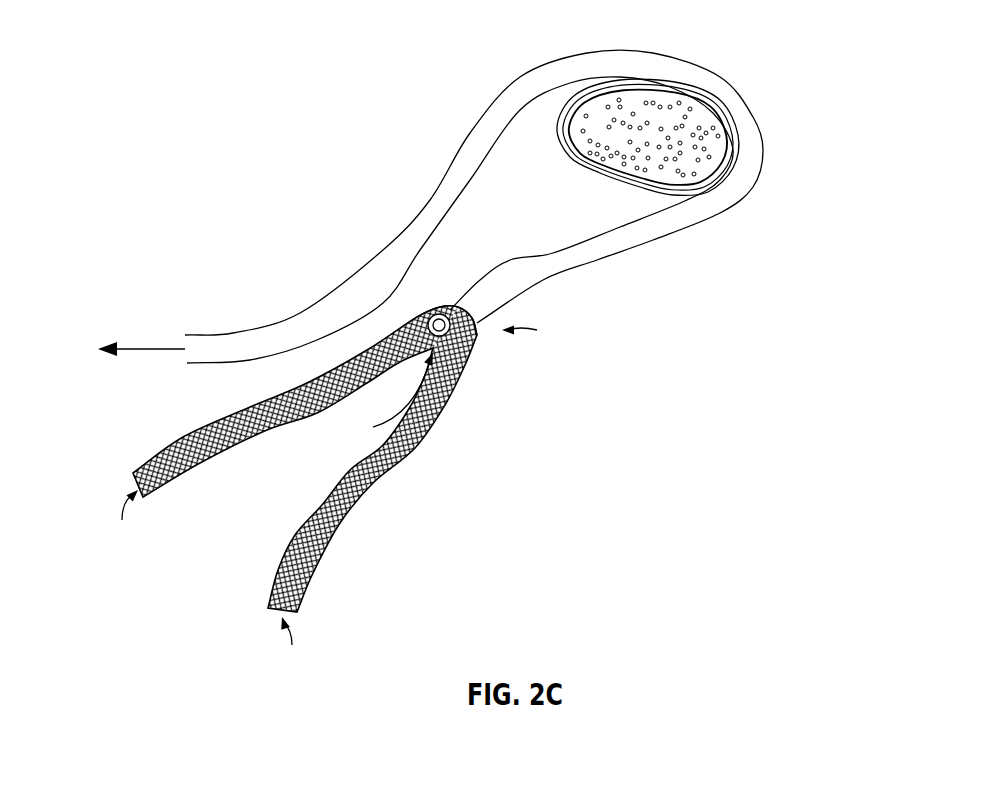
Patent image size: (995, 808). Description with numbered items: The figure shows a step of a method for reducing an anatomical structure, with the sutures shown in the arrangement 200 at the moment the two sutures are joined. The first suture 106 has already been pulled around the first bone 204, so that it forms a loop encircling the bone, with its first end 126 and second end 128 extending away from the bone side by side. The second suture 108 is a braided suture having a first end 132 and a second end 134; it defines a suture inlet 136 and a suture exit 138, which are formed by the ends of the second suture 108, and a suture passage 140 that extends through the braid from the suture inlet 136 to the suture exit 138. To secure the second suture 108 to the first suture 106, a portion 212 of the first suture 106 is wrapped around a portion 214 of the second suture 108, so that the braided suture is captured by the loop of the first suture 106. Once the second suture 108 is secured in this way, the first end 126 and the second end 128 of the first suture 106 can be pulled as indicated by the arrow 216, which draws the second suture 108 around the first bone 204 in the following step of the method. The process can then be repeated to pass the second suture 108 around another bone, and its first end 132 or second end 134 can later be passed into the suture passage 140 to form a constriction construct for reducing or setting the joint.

The suture anchor assembly 200 is at (449, 345).
The first suture 106 is at (455, 225).
The first end 126 is at (226, 334).
The second end 128 is at (210, 365).
The first bone 204 is at (657, 93).
The second suture 108 is at (320, 467).
The second end 134 is at (168, 487).
The first end 132 is at (300, 597).
The suture passage 140 is at (442, 408).
The suture inlet 136 is at (122, 521).
The suture exit 138 is at (299, 648).
The portion of first suture 212 is at (380, 399).
The portion of second suture 214 is at (537, 332).
The arrow 216 is at (140, 349).